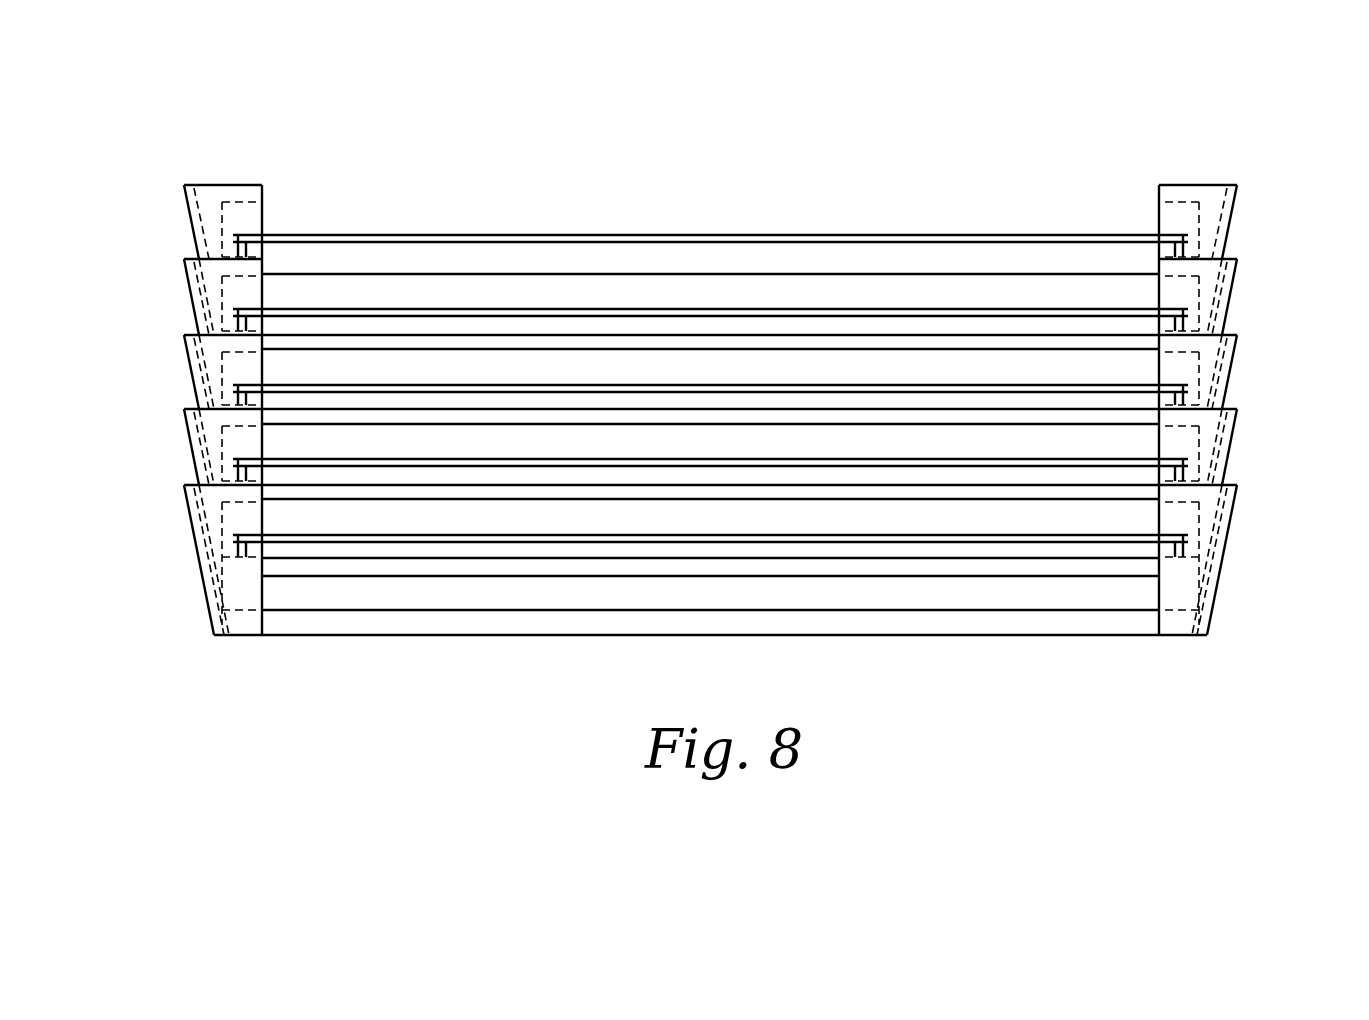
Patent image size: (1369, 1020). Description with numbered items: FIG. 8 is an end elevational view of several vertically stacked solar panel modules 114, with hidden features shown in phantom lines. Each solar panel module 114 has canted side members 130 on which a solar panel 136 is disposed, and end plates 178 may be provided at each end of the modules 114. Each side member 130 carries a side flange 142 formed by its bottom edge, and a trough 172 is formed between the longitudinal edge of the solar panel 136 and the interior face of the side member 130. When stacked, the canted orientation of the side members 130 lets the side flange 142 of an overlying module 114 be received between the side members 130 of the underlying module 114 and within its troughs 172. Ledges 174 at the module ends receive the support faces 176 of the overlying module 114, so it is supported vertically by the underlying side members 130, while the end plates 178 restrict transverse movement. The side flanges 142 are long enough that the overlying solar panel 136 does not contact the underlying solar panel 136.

The solar panel module 114 is at (187, 300).
The solar panel 136 is at (512, 422).
The side member 130 is at (1232, 231).
The end plate 178 is at (1237, 185).
The side flange 142 is at (1234, 324).
The trough 172 is at (1234, 324).
The support face 176 is at (1212, 463).
The ledge 174 is at (1206, 574).